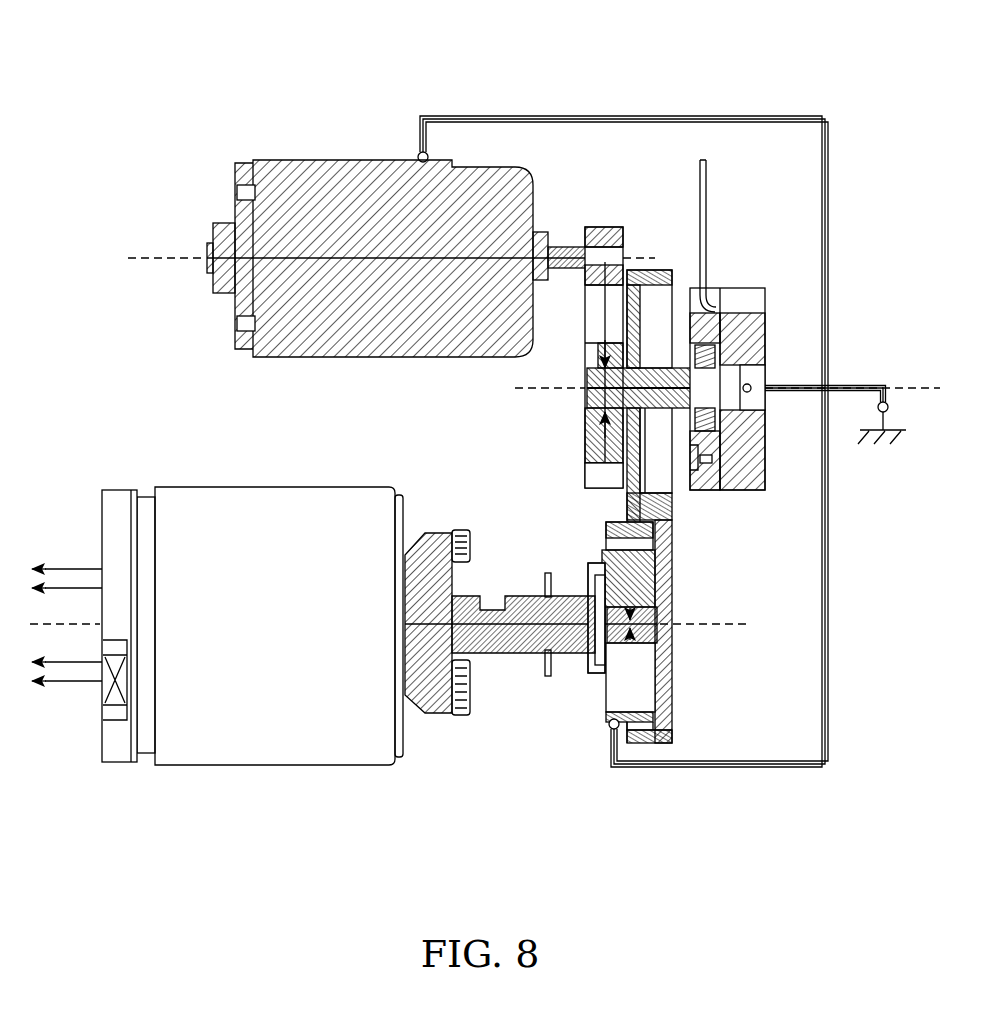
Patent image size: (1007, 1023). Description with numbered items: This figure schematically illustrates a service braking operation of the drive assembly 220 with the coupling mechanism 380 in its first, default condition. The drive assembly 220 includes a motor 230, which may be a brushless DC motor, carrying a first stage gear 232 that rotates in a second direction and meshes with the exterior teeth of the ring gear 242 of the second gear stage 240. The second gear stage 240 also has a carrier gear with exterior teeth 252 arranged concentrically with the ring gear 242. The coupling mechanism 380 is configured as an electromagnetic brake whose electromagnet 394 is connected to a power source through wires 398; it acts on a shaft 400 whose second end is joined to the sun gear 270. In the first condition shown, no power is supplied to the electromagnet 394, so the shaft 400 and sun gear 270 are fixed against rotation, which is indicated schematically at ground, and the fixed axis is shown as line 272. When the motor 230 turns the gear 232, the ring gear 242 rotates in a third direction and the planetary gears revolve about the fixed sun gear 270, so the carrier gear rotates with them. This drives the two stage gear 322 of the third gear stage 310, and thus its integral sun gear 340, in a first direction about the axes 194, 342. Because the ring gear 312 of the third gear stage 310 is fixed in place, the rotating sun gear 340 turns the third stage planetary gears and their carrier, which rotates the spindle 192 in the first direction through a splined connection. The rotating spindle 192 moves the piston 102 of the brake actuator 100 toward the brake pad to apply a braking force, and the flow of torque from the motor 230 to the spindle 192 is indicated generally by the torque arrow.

The drive assembly 220 is at (752, 60).
The motor 230 is at (360, 180).
The gear 232 is at (591, 225).
The second gear stage 240 is at (622, 214).
The ring gear 242 is at (585, 476).
The exterior teeth 252 is at (672, 266).
The sun gear 270 is at (590, 380).
The output axis / electrical connection 272 is at (916, 385).
The coupling mechanism 380 is at (748, 278).
The electromagnet 394 is at (763, 452).
The wires 398 is at (708, 180).
The shaft 400 is at (681, 415).
The third gear stage 310 is at (692, 713).
The ring gear 312 is at (606, 533).
The two stage gear 322 is at (683, 746).
The sun gear 340 is at (657, 616).
The axis 194 is at (722, 626).
The axis 342 is at (683, 620).
The spindle 192 is at (520, 655).
The linear actuator 100 is at (405, 780).
The piston 102 is at (120, 762).